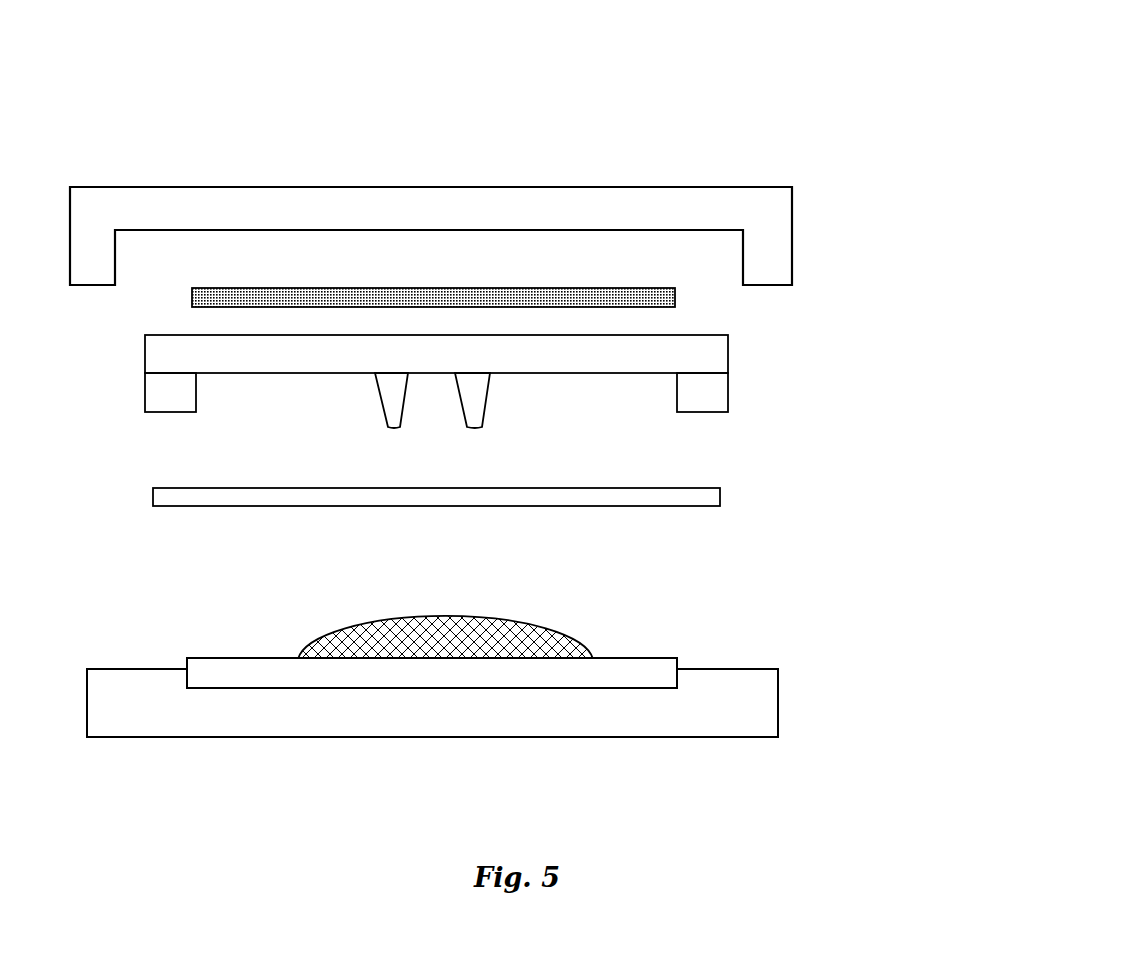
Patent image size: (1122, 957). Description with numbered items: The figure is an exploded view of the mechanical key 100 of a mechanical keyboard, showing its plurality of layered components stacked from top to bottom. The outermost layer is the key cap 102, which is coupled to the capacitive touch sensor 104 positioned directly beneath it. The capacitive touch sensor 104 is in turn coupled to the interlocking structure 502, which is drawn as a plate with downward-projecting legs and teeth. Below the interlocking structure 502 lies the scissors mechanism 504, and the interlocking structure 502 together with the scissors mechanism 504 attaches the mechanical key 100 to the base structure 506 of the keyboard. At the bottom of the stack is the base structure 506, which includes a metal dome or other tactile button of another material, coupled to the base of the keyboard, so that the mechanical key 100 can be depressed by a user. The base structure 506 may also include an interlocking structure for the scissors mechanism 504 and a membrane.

The mechanical key 100 is at (527, 374).
The key cap 102 is at (808, 210).
The capacitive touch sensor 104 is at (693, 297).
The interlocking structure 502 is at (731, 380).
The scissors mechanism 504 is at (739, 497).
The base structure 506 is at (796, 698).